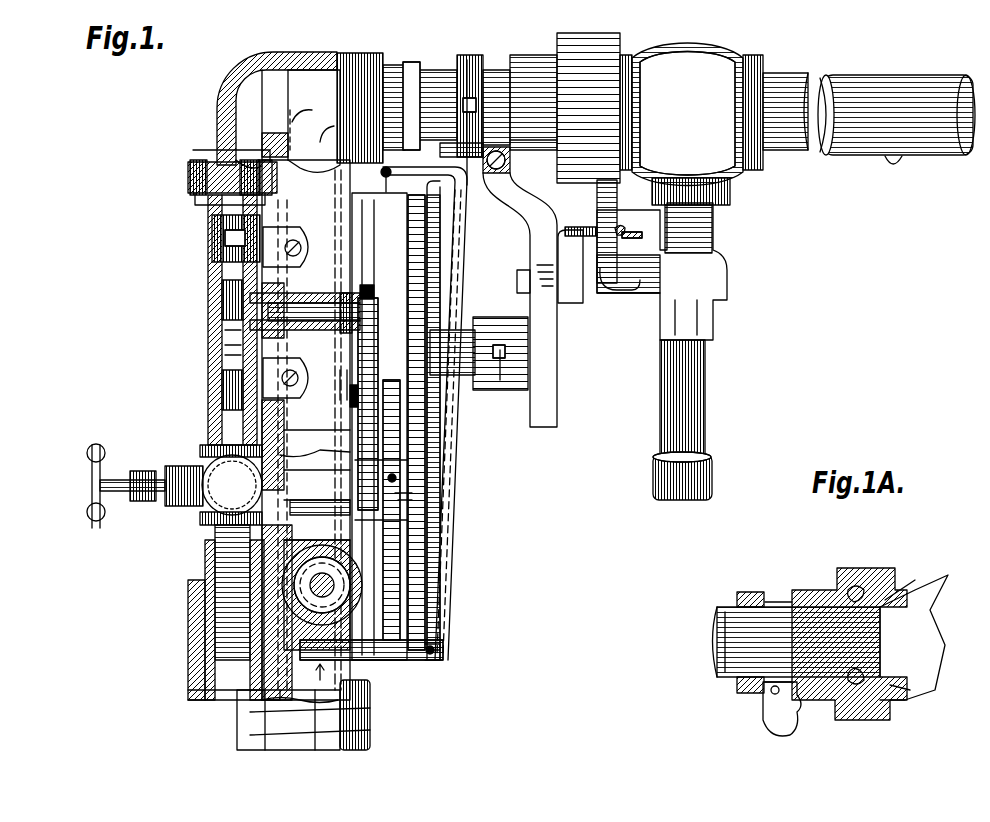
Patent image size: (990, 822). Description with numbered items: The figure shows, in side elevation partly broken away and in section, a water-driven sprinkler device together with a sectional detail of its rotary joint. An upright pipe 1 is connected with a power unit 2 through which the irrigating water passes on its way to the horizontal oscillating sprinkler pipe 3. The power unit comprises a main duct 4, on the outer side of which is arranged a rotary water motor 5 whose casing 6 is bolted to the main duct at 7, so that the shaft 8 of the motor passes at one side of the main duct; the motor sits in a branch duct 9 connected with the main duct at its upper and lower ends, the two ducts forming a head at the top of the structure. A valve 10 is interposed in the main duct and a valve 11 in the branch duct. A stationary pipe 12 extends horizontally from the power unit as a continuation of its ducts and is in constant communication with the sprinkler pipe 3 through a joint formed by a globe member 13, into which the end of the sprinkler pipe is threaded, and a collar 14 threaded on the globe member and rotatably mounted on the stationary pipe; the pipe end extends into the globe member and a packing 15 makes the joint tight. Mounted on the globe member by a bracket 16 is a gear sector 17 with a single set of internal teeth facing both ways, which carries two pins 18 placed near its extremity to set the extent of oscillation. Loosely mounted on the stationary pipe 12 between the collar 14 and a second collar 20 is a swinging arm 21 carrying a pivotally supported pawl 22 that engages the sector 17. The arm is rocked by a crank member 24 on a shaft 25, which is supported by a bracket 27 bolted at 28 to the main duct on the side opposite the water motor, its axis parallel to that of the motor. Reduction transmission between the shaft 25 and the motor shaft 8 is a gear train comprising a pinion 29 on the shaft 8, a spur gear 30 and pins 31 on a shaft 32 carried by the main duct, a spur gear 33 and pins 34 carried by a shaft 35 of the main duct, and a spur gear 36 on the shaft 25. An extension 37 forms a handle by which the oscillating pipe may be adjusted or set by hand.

In FIG. 1, the upright pipe 1 is at (258, 732).
In FIG. 1, the power unit 2 is at (940, 338).
In FIG. 1, the horizontal oscillating sprinkler pipe 3 is at (885, 80).
In FIG. 1, the main duct 4 is at (460, 39).
In FIG. 1, the rotary water motor 5 is at (222, 302).
In FIG. 1, the casing 6 is at (212, 239).
In FIG. 1, the bolting point 7 is at (296, 240).
In FIG. 1, the shaft 8 is at (335, 290).
In FIG. 1, the branch duct 9 is at (230, 110).
In FIG. 1, the valve 10 is at (375, 592).
In FIG. 1, the valve 11 is at (165, 478).
In FIG. 1, the stationary pipe 12 is at (436, 74).
In FIG. 1A, the stationary pipe 12 is at (728, 636).
In FIG. 1, the globe member 13 is at (718, 62).
In FIG. 1A, the globe member 13 is at (928, 622).
In FIG. 1, the collar 14 is at (583, 45).
In FIG. 1A, the collar 14 is at (838, 578).
In FIG. 1A, the packing 15 is at (853, 702).
In FIG. 1, the bracket 16 is at (728, 242).
In FIG. 1, the gear sector 17 is at (612, 292).
In FIG. 1, the pins 18 is at (633, 237).
In FIG. 1, the collar 20 is at (470, 62).
In FIG. 1A, the collar 20 is at (744, 590).
In FIG. 1, the swinging arm 21 is at (528, 242).
In FIG. 1A, the swinging arm 21 is at (765, 732).
In FIG. 1, the pawl 22 is at (588, 232).
In FIG. 1, the crank member 24 is at (503, 382).
In FIG. 1, the shaft 25 is at (492, 345).
In FIG. 1, the bracket 27 is at (448, 522).
In FIG. 1, the bolts 28 is at (386, 178).
In FIG. 1, the pinion 29 is at (370, 300).
In FIG. 1, the spur gear 30 is at (371, 342).
In FIG. 1, the pins 31 is at (352, 398).
In FIG. 1, the shaft 32 is at (322, 375).
In FIG. 1, the spur gear 33 is at (398, 480).
In FIG. 1, the pins 34 is at (414, 500).
In FIG. 1, the shaft 35 is at (301, 506).
In FIG. 1, the spur gear 36 is at (420, 268).
In FIG. 1, the extension 37 is at (700, 414).